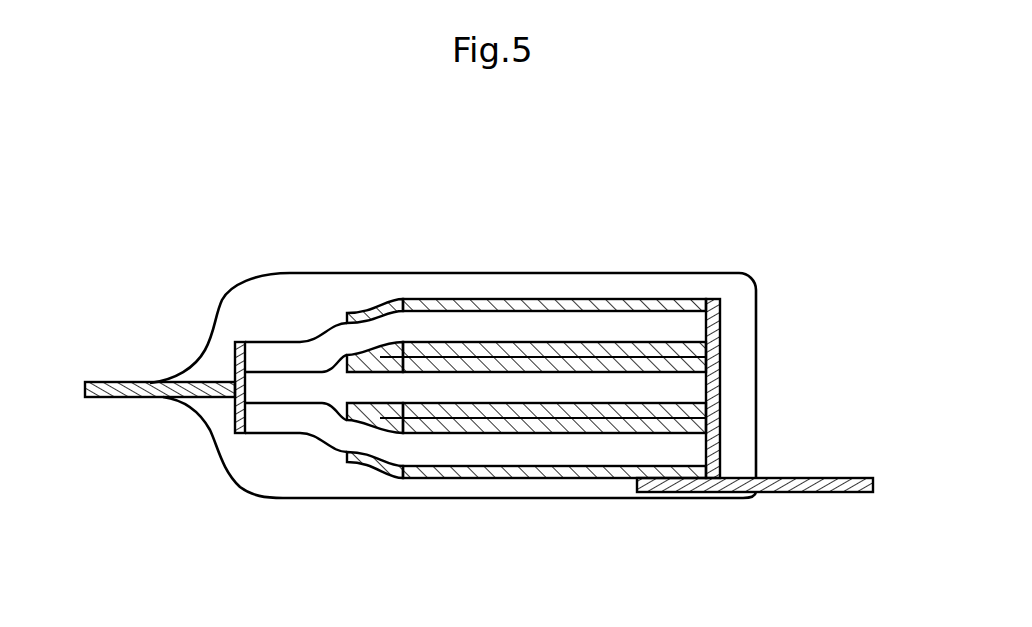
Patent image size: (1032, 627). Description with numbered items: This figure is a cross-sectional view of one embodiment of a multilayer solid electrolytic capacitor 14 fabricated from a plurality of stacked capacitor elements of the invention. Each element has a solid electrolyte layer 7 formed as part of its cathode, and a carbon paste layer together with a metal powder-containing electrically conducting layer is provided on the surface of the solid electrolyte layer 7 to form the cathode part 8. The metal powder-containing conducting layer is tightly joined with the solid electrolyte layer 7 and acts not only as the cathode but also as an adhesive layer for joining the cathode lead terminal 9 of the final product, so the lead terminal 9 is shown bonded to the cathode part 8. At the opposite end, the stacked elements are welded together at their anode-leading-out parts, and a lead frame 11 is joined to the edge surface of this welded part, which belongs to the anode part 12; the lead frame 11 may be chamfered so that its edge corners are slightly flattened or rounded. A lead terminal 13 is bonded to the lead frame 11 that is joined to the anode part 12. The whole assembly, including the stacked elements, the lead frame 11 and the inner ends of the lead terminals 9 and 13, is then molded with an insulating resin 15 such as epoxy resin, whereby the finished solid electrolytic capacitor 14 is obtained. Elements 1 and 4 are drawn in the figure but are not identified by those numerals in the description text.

The piezoelectric laminate body 1 is at (465, 299).
The connecting electrode portion 4 is at (386, 299).
The solid electrolyte layer 7 is at (572, 299).
The cathode part 8 is at (528, 494).
The cathode lead terminal 9 is at (805, 492).
The lead frame 11 is at (235, 433).
The anode part 12 is at (310, 422).
The lead terminal 13 is at (145, 397).
The solid electrolytic capacitor 14 is at (705, 266).
The insulating resin 15 is at (738, 295).